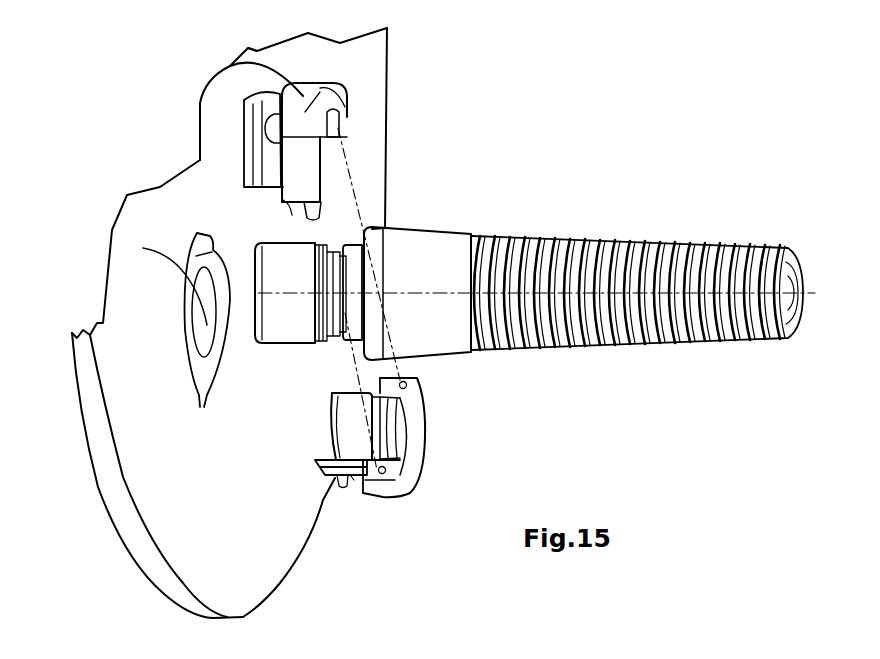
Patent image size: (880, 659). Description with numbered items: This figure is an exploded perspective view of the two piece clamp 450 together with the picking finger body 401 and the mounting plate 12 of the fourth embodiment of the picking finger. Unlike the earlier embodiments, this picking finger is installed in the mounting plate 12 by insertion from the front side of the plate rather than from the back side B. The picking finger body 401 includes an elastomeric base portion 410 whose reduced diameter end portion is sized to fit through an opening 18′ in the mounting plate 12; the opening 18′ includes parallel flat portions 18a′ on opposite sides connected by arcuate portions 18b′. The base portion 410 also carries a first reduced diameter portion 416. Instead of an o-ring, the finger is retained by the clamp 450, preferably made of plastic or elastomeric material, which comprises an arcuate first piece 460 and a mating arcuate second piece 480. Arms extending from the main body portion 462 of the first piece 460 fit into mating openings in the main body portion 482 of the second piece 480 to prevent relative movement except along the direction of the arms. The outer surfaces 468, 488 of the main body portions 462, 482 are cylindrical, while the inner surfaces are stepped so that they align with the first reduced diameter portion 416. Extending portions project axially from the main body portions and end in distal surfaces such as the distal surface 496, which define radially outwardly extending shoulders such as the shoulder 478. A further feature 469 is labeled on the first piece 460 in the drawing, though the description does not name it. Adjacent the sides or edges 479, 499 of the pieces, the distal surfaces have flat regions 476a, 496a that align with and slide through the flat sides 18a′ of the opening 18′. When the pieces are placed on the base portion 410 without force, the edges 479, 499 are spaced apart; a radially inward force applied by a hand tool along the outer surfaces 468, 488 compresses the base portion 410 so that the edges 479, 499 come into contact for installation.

The mounting plate 12 is at (104, 511).
The opening 18′ is at (183, 226).
The parallel flat portions 18a′ is at (202, 400).
The arcuate portions 18b′ is at (167, 273).
The back side B is at (83, 413).
The picking finger body 401 is at (581, 222).
The base portion 410 is at (290, 338).
The first reduced diameter portion 416 is at (340, 278).
The two piece clamp 450 is at (320, 60).
The arcuate first piece 460 is at (248, 48).
The main body portion 462 is at (307, 93).
The outer surface 468 is at (305, 112).
The clamp nut 469 is at (347, 137).
The flat region of distal surface 476a is at (247, 185).
The shoulder 478 is at (254, 145).
The side or edge 479 is at (286, 203).
The arcuate second piece 480 is at (438, 440).
The main body portion 482 is at (373, 492).
The outer surface 488 is at (385, 490).
The distal surface 496 is at (333, 483).
The flat region of distal surface 496a is at (316, 468).
The side or edge 499 is at (358, 478).